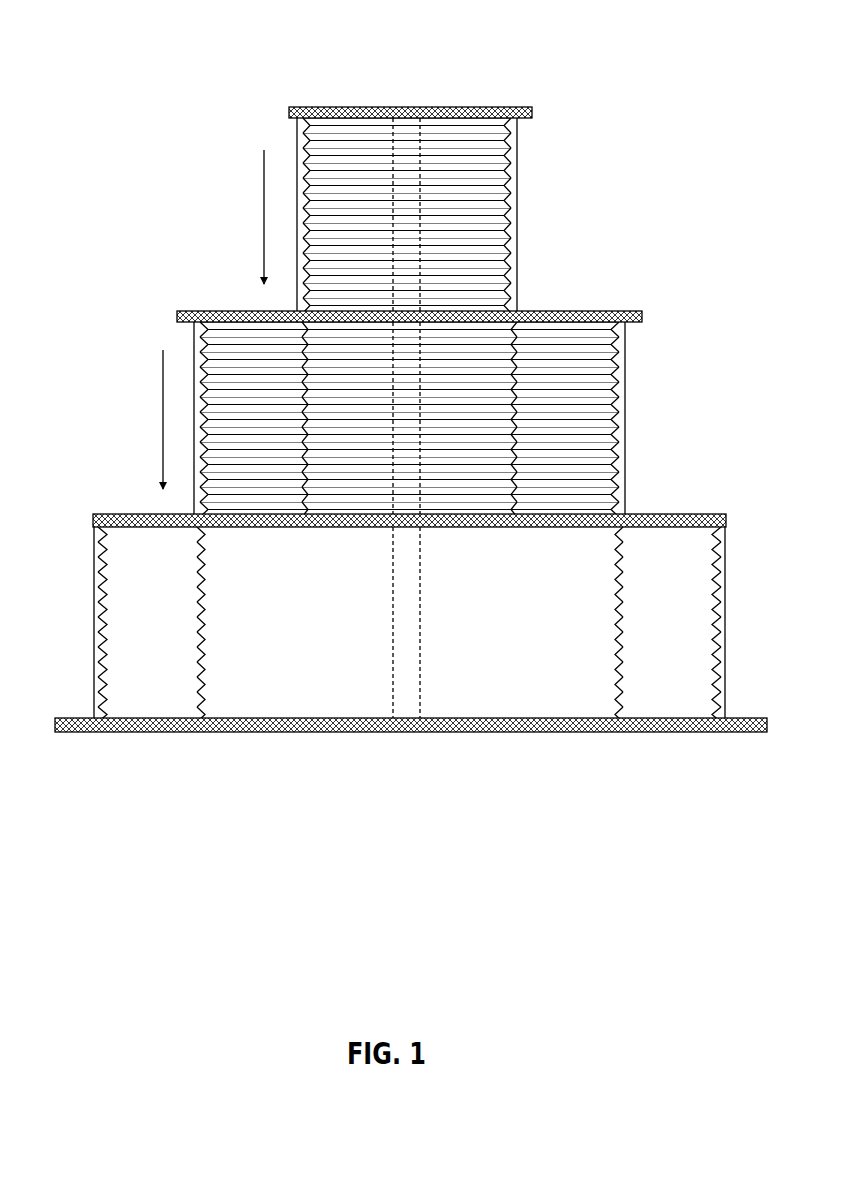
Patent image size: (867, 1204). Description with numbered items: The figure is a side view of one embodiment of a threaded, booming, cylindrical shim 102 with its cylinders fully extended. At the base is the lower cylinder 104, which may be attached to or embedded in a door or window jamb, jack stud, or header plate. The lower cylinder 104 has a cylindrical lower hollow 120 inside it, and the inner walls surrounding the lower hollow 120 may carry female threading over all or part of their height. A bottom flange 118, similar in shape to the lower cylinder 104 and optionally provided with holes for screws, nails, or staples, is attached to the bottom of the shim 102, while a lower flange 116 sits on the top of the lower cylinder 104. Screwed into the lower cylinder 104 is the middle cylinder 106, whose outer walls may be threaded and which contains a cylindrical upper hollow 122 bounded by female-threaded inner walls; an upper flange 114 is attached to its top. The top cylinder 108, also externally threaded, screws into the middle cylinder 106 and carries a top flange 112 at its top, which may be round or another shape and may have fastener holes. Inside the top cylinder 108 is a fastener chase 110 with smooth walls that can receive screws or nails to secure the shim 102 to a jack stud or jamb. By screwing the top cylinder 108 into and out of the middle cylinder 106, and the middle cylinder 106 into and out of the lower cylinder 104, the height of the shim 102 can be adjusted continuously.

The threaded booming cylindrical shim 102 is at (242, 39).
The lower cylinder 104 is at (685, 625).
The middle cylinder 106 is at (590, 438).
The top cylinder 108 is at (479, 166).
The fastener chase 110 is at (404, 137).
The top flange 112 is at (495, 108).
The upper flange 114 is at (222, 311).
The lower flange 116 is at (150, 514).
The bottom flange 118 is at (605, 732).
The lower hollow 120 is at (335, 625).
The upper hollow 122 is at (368, 437).